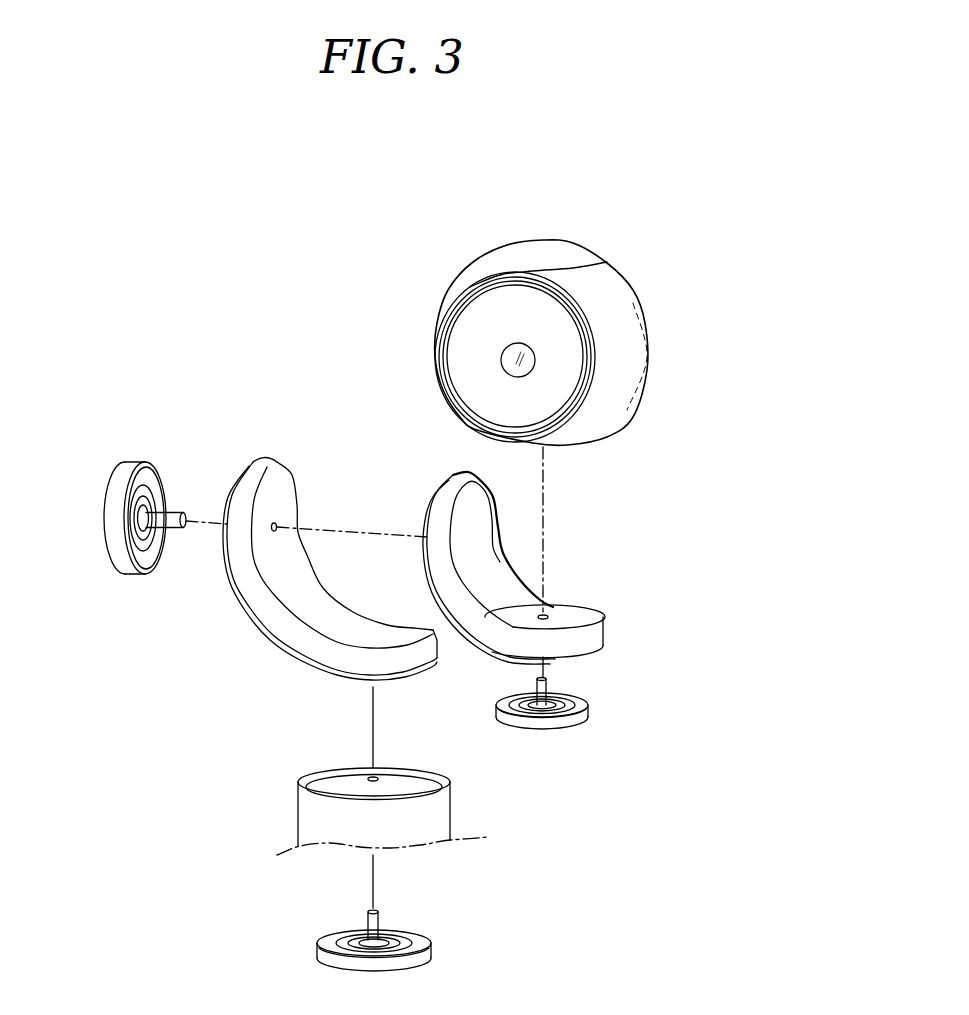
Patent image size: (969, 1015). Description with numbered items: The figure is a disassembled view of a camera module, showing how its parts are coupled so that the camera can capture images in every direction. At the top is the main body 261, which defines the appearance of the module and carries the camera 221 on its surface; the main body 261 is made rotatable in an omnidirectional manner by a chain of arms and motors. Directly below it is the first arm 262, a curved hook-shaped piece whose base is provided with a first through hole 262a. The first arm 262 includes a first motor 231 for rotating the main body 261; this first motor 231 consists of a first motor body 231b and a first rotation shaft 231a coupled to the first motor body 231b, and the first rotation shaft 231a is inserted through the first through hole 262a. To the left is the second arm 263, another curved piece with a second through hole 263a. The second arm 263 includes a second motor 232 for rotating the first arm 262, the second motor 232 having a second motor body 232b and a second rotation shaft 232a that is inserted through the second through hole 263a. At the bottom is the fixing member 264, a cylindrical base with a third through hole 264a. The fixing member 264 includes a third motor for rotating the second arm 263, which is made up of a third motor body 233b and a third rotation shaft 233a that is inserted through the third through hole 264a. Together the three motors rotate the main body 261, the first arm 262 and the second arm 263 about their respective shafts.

The camera 221 is at (507, 360).
The first motor 231 is at (454, 811).
The first rotation shaft 231a is at (547, 682).
The first motor body 231b is at (580, 713).
The second motor 232 is at (155, 573).
The second rotation shaft 232a is at (172, 524).
The second motor body 232b is at (123, 560).
The third rotation shaft 233a is at (368, 920).
The third motor body 233b is at (317, 950).
The main body 261 is at (483, 267).
The first arm 262 is at (562, 562).
The first through hole 262a is at (543, 615).
The second arm 263 is at (330, 528).
The second through hole 263a is at (277, 523).
The fixing member 264 is at (379, 797).
The third through hole 264a is at (372, 778).